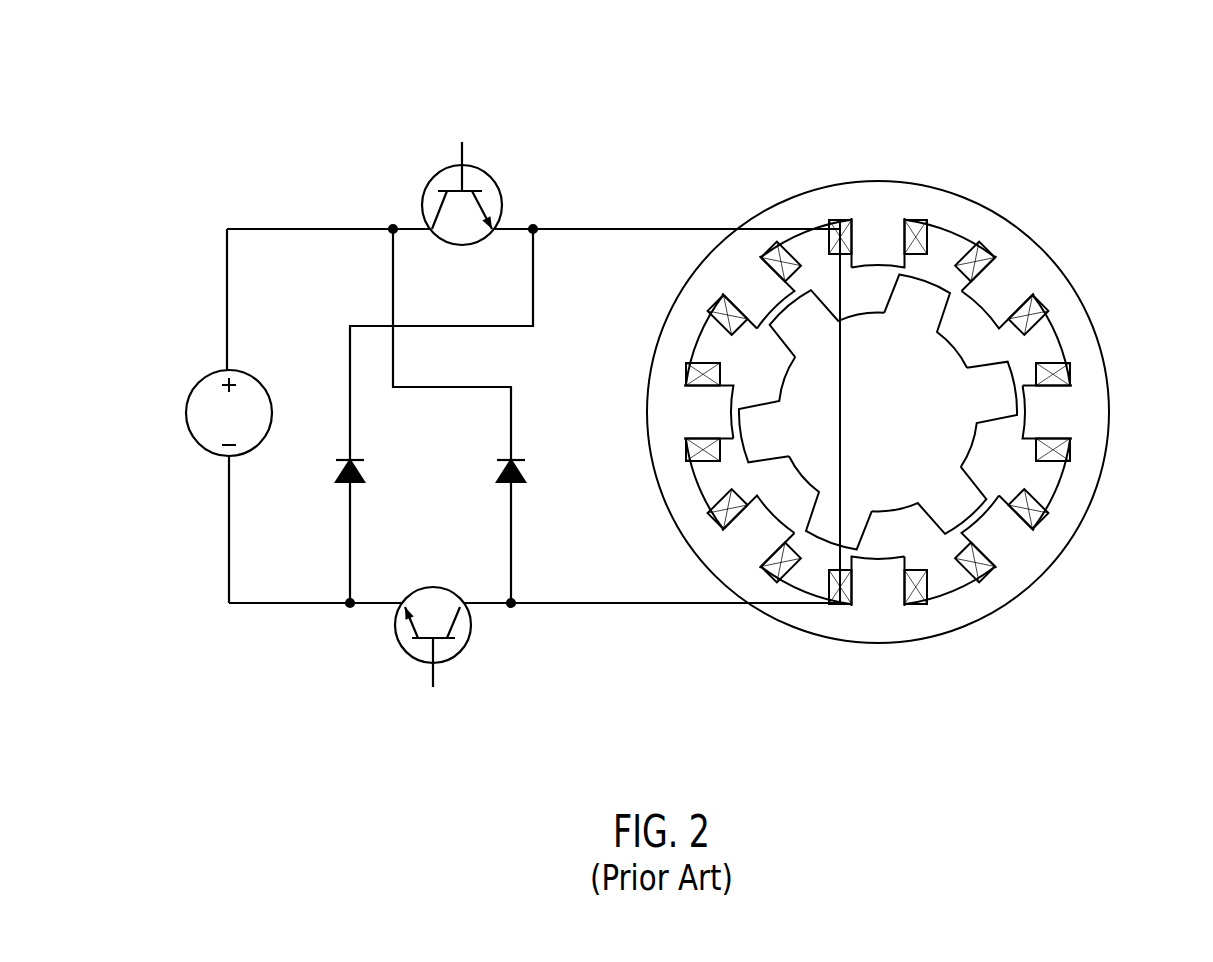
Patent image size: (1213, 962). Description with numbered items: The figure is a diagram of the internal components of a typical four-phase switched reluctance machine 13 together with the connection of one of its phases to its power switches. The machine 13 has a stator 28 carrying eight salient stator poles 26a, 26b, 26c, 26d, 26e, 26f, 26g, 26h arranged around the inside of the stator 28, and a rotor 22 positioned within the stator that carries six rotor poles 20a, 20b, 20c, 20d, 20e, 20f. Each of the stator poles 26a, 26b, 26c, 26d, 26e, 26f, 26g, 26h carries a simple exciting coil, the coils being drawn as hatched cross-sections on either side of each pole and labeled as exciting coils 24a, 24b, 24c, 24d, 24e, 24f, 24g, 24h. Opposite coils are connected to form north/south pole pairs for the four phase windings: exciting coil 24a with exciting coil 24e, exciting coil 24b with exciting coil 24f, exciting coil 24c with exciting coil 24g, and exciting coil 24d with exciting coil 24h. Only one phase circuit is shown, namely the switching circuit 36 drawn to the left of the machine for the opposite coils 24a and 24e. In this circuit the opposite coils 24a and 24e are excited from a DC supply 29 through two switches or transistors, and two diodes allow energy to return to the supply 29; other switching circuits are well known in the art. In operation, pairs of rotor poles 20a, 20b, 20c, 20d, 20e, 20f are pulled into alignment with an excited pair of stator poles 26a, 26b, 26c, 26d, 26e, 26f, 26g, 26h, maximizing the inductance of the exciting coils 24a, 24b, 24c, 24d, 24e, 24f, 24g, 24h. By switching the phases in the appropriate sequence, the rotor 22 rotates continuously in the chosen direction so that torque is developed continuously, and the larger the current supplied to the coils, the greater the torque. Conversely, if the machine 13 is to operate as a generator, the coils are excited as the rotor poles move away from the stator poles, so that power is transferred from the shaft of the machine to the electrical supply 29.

The switched reluctance machine 13 is at (1018, 68).
The drive circuit 36 is at (248, 182).
The DC supply 29 is at (198, 410).
The stator 28 is at (780, 200).
The rotor 22 is at (940, 437).
The rotor pole 20a is at (928, 282).
The rotor pole 20b is at (1000, 395).
The rotor pole 20c is at (948, 512).
The rotor pole 20d is at (823, 525).
The rotor pole 20e is at (765, 433).
The rotor pole 20f is at (797, 330).
The exciting coil 24a is at (840, 218).
The exciting coil 24b is at (980, 258).
The exciting coil 24c is at (1062, 452).
The exciting coil 24d is at (1030, 510).
The exciting coil 24e is at (918, 594).
The exciting coil 24f is at (722, 520).
The exciting coil 24g is at (700, 378).
The exciting coil 24h is at (745, 318).
The stator pole 26a is at (877, 225).
The stator pole 26b is at (1010, 300).
The stator pole 26c is at (1047, 412).
The stator pole 26d is at (1008, 538).
The stator pole 26e is at (880, 604).
The stator pole 26f is at (765, 541).
The stator pole 26g is at (712, 415).
The stator pole 26h is at (757, 297).